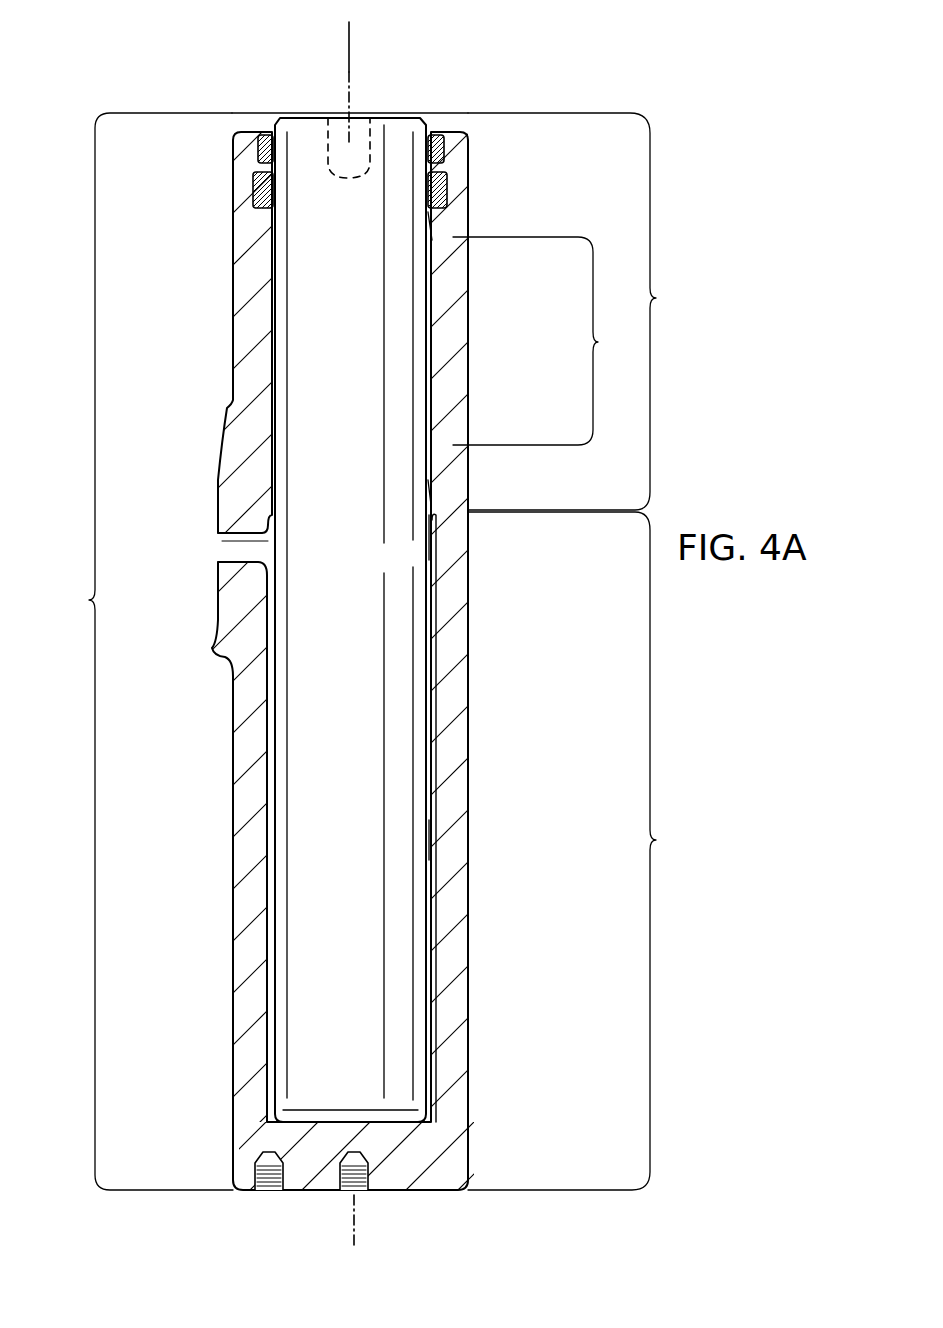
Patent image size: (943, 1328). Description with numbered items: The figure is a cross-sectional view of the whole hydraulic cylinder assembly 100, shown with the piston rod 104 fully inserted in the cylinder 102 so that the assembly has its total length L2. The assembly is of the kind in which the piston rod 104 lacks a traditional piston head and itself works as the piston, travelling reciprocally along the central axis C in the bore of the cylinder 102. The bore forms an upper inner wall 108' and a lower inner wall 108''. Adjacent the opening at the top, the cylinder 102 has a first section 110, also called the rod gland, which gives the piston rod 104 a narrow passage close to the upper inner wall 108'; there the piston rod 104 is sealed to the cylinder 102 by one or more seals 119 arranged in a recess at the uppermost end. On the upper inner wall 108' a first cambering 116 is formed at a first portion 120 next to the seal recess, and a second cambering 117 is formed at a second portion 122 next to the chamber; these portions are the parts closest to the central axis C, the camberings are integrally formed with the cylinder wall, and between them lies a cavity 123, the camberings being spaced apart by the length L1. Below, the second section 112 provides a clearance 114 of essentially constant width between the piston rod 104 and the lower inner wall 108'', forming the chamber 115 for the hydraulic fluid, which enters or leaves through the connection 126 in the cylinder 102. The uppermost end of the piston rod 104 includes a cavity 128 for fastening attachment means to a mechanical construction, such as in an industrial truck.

The hydraulic cylinder assembly 100 is at (565, 59).
The cylinder 102 is at (456, 617).
The piston rod 104 is at (403, 133).
The upper inner wall 108' is at (210, 243).
The lower inner wall 108'' is at (500, 818).
The first section 110 is at (591, 311).
The second section 112 is at (591, 851).
The clearance 114 is at (432, 532).
The chamber 115 is at (433, 846).
The first cambering 116 is at (434, 224).
The second cambering 117 is at (436, 490).
The seals 119 is at (447, 176).
The first portion 120 is at (528, 215).
The second portion 122 is at (513, 482).
The cavity 123 is at (422, 352).
The connection 126 is at (224, 550).
The cavity 128 is at (338, 110).
The central axis C is at (352, 75).
The length L1 is at (545, 341).
The total length L2 is at (140, 651).